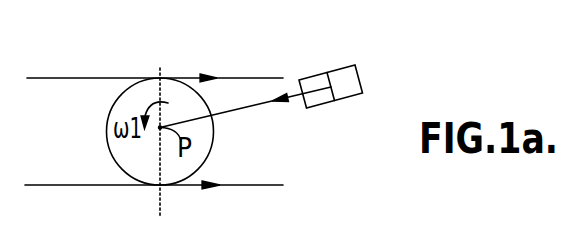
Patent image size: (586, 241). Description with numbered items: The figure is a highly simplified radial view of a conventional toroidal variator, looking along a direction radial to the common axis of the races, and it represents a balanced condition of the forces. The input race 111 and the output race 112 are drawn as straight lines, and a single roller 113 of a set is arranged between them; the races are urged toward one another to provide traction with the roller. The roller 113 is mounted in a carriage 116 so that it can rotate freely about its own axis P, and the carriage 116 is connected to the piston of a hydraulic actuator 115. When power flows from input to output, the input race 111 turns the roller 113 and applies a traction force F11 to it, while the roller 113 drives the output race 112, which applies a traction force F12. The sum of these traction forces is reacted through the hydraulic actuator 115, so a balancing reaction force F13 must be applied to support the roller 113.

The input race 111 is at (250, 187).
The output race 112 is at (237, 77).
The roller 113 is at (132, 157).
The hydraulic actuator 115 is at (362, 96).
The carriage 116 is at (230, 108).
The traction force F11 is at (163, 186).
The traction force F12 is at (171, 78).
The reaction force F13 is at (293, 95).